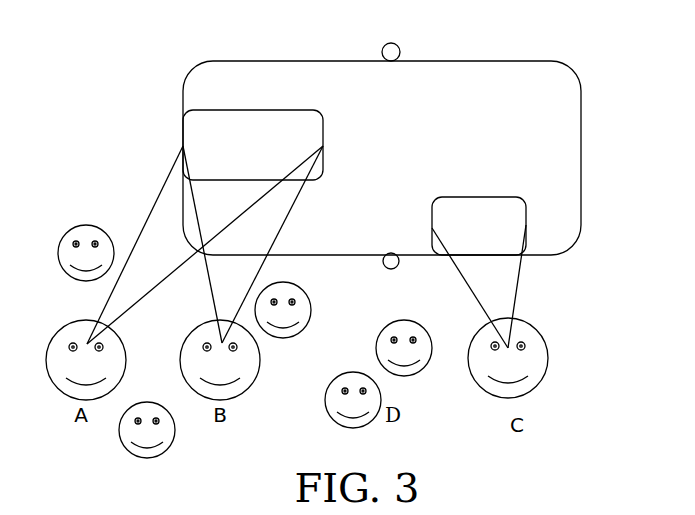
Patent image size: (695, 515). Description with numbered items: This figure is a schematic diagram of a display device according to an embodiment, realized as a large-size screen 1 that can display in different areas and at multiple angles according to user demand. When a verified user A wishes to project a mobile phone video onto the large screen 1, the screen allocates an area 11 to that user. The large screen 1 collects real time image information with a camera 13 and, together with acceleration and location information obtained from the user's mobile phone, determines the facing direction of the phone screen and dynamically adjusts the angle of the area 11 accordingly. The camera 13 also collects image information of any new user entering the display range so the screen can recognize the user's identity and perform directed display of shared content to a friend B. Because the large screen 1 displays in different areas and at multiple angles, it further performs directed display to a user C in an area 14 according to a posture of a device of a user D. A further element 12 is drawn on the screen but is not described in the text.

The large-size screen 1 is at (538, 107).
The area 11 is at (222, 146).
The second camera 12 is at (396, 267).
The camera 13 is at (396, 46).
The area 14 is at (505, 228).